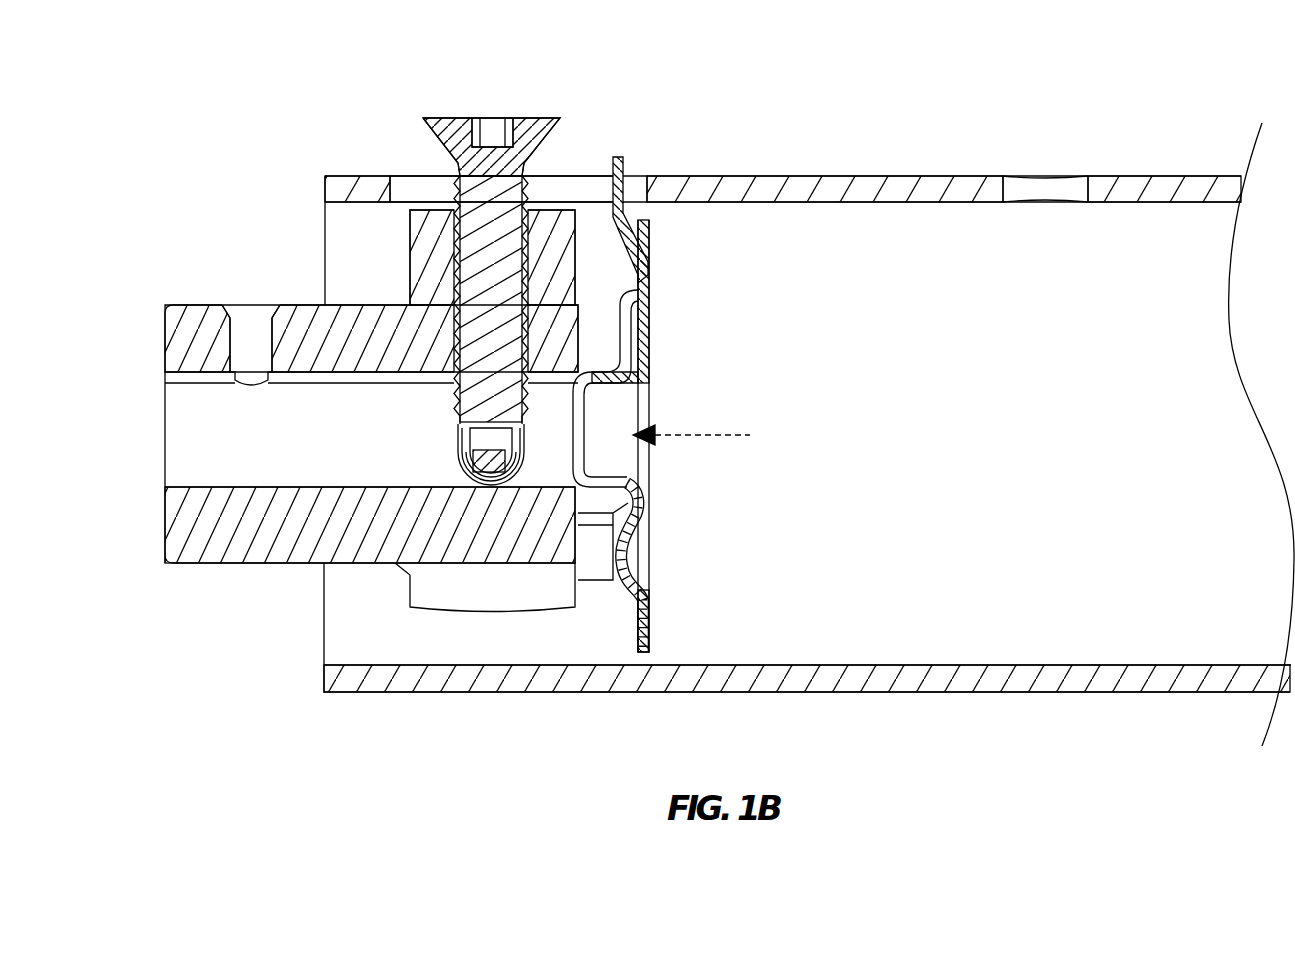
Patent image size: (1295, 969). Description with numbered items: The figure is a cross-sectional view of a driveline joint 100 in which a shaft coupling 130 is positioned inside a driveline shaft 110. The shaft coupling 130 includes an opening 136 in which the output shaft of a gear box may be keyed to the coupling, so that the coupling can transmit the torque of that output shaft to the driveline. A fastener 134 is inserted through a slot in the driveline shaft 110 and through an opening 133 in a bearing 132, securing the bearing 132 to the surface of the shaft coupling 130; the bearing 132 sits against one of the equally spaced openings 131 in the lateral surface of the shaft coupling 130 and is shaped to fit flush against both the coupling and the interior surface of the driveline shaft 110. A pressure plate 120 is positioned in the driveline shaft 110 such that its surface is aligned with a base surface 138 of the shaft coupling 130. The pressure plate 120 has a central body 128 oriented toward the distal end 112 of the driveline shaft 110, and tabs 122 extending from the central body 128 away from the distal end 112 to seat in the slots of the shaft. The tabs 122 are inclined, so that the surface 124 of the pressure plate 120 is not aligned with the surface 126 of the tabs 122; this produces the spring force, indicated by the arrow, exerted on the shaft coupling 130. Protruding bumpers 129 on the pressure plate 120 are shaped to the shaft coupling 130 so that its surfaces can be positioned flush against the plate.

The driveline joint 100 is at (171, 70).
The driveline shaft 110 is at (1136, 218).
The distal end 112 is at (1038, 447).
The pressure plate 120 is at (652, 633).
The tab 122 is at (625, 158).
The surface of the pressure plate 124 is at (606, 188).
The surface of the tabs 126 is at (652, 300).
The central body 128 is at (656, 518).
The protruding bumper 129 is at (587, 432).
The shaft coupling 130 is at (185, 415).
The opening 131 is at (462, 343).
The bearing 132 is at (430, 277).
The opening 133 is at (393, 203).
The fastener 134 is at (455, 130).
The opening 136 is at (253, 330).
The base surface 138 is at (550, 458).